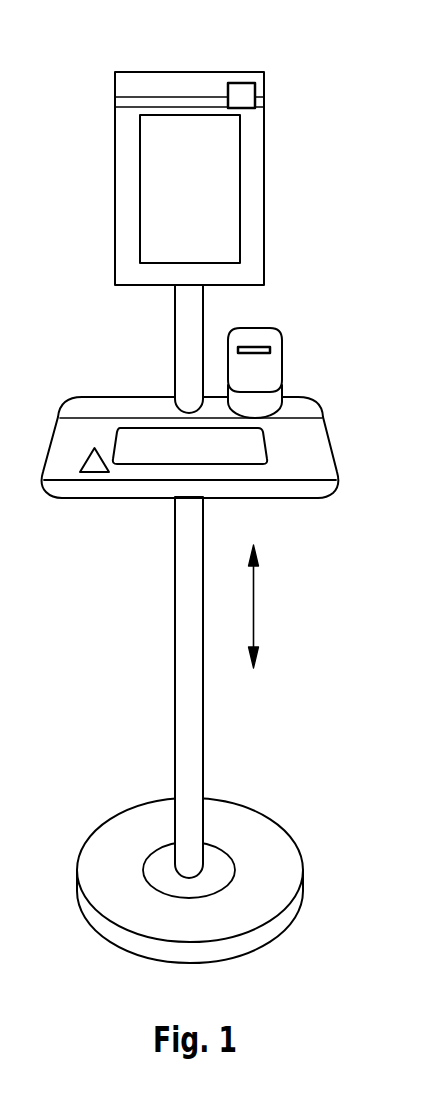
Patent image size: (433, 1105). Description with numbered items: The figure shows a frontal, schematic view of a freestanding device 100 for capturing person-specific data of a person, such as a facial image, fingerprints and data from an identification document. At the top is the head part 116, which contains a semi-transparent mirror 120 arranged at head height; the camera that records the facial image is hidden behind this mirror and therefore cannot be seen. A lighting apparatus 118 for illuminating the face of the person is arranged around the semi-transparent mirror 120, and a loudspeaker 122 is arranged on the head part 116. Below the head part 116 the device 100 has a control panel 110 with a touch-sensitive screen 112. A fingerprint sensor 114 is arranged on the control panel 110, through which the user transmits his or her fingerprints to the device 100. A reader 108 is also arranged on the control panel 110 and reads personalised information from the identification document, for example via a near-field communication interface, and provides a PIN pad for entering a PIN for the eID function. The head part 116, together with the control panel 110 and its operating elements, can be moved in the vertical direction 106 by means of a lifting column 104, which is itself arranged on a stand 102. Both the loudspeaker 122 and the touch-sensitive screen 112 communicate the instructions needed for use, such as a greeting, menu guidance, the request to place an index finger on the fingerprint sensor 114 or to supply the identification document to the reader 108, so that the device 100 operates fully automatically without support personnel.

The device 100 is at (76, 102).
The stand 102 is at (247, 822).
The lifting column 104 is at (182, 697).
The vertical direction 106 is at (255, 608).
The reader 108 is at (273, 362).
The control panel 110 is at (318, 440).
The touch-sensitive screen 112 is at (148, 452).
The fingerprint sensor 114 is at (93, 475).
The head part 116 is at (257, 187).
The lighting apparatus 118 is at (173, 82).
The semi-transparent mirror 120 is at (153, 185).
The loudspeaker 122 is at (245, 89).